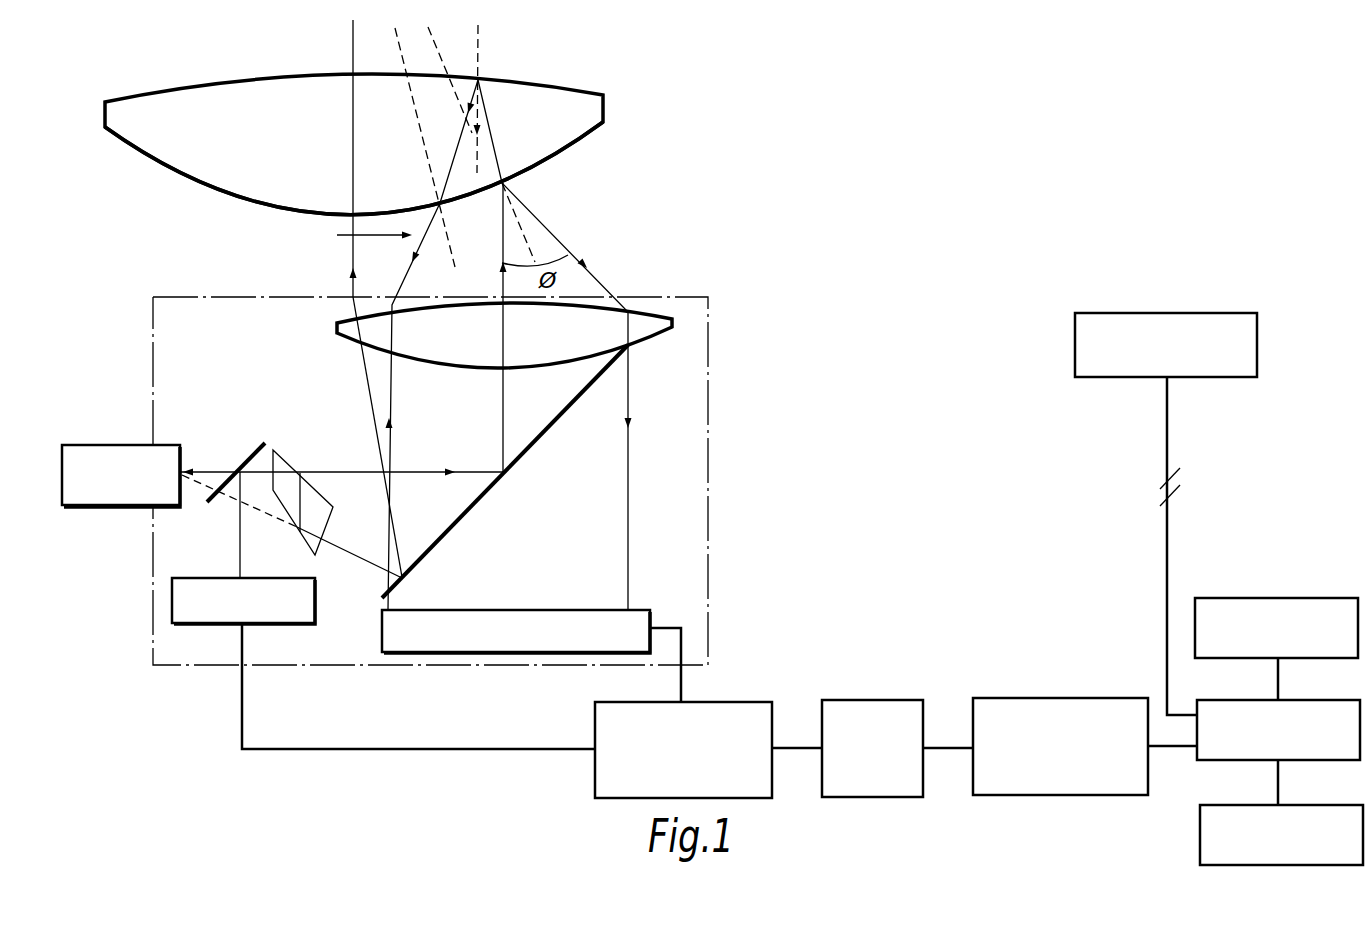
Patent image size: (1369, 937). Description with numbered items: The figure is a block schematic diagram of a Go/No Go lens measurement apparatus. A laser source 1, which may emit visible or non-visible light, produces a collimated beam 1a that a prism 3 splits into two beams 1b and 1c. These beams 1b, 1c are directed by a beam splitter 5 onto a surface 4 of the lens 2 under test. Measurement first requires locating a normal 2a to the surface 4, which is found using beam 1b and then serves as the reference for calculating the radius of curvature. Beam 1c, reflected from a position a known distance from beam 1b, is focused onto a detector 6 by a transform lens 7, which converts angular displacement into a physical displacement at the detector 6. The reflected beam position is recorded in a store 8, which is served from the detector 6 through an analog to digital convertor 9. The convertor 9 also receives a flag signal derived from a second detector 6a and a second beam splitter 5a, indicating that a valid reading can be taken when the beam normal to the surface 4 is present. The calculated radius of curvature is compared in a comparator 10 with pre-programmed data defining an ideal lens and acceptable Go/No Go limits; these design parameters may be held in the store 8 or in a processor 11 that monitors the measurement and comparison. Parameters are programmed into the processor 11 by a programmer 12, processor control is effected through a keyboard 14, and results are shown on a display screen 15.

The laser source 1 is at (90, 443).
The collimated beam 1a is at (205, 470).
The beam 1b is at (358, 555).
The beam 1c is at (335, 470).
The lens 2 is at (326, 123).
The normal 2a is at (242, 558).
The prism 3 is at (283, 457).
The surface 4 is at (547, 160).
The beam splitter 5 is at (487, 490).
The beam splitter 5a is at (263, 443).
The detector 6 is at (588, 607).
The detector 6a is at (213, 577).
The transform lens 7 is at (643, 320).
The store 8 is at (882, 698).
The analog to digital converter 9 is at (732, 701).
The comparator 10 is at (1103, 697).
The processor 11 is at (1320, 699).
The programmer 12 is at (1217, 312).
The keyboard 14 is at (1317, 804).
The display screen 15 is at (1317, 597).